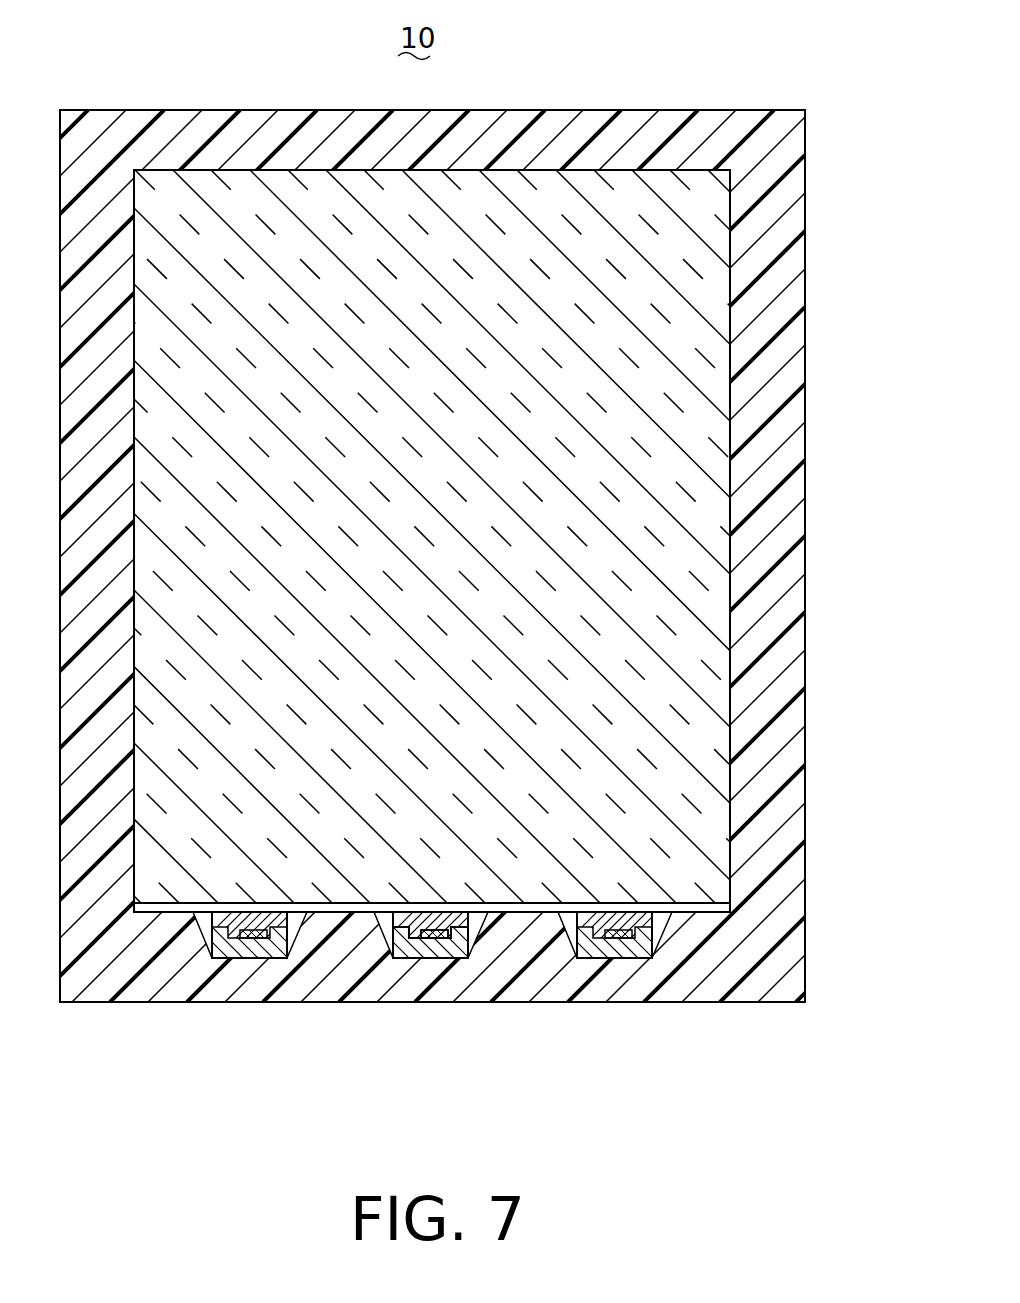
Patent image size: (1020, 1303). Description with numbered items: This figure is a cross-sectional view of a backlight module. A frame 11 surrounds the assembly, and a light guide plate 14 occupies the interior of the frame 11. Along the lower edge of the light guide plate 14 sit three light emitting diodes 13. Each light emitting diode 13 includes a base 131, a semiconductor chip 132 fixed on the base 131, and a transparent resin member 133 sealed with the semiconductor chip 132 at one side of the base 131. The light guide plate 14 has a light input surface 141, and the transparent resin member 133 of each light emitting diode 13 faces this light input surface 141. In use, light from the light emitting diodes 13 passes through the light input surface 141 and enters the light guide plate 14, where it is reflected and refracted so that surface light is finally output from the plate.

The frame 11 is at (790, 760).
The light emitting diode 13 is at (548, 1072).
The base 131 is at (393, 948).
The semiconductor chip 132 is at (447, 938).
The transparent resin member 133 is at (467, 915).
The light guide plate 14 is at (572, 548).
The light input surface 141 is at (708, 905).